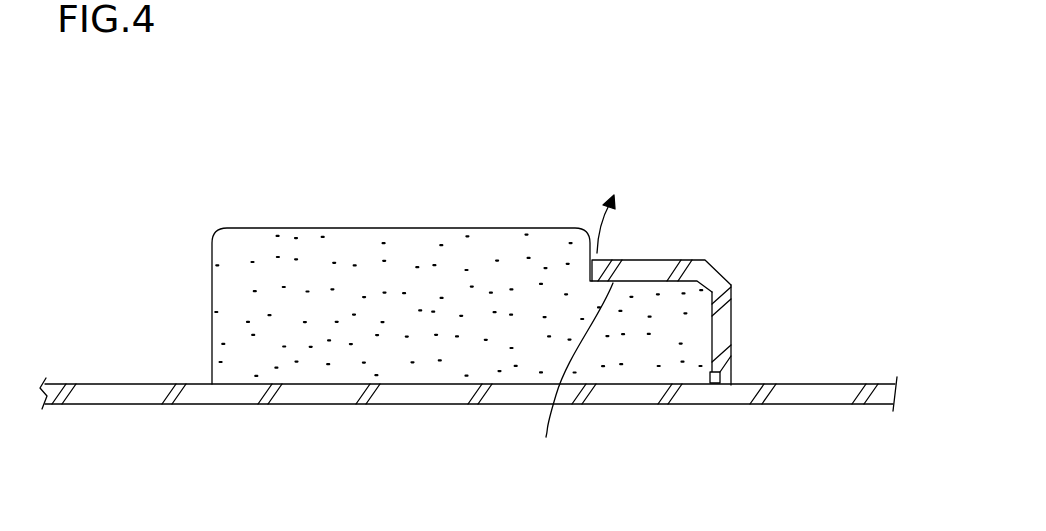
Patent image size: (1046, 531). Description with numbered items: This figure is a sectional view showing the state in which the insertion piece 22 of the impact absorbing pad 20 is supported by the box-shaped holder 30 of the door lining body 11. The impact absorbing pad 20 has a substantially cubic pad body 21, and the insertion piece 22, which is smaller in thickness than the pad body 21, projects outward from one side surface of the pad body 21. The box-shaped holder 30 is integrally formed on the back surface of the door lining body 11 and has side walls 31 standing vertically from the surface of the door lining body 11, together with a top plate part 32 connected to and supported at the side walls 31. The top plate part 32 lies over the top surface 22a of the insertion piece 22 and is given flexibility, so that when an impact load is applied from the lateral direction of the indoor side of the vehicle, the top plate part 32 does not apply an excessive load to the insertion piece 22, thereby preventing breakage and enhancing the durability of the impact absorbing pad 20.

The door lining body 11 is at (208, 398).
The impact absorbing pad 20 is at (457, 315).
The pad body 21 is at (364, 268).
The insertion piece 22 is at (643, 358).
The top surface of the insertion piece 22a is at (560, 376).
The box-shaped holder 30 is at (711, 264).
The side walls 31 is at (765, 335).
The top plate part 32 is at (648, 258).